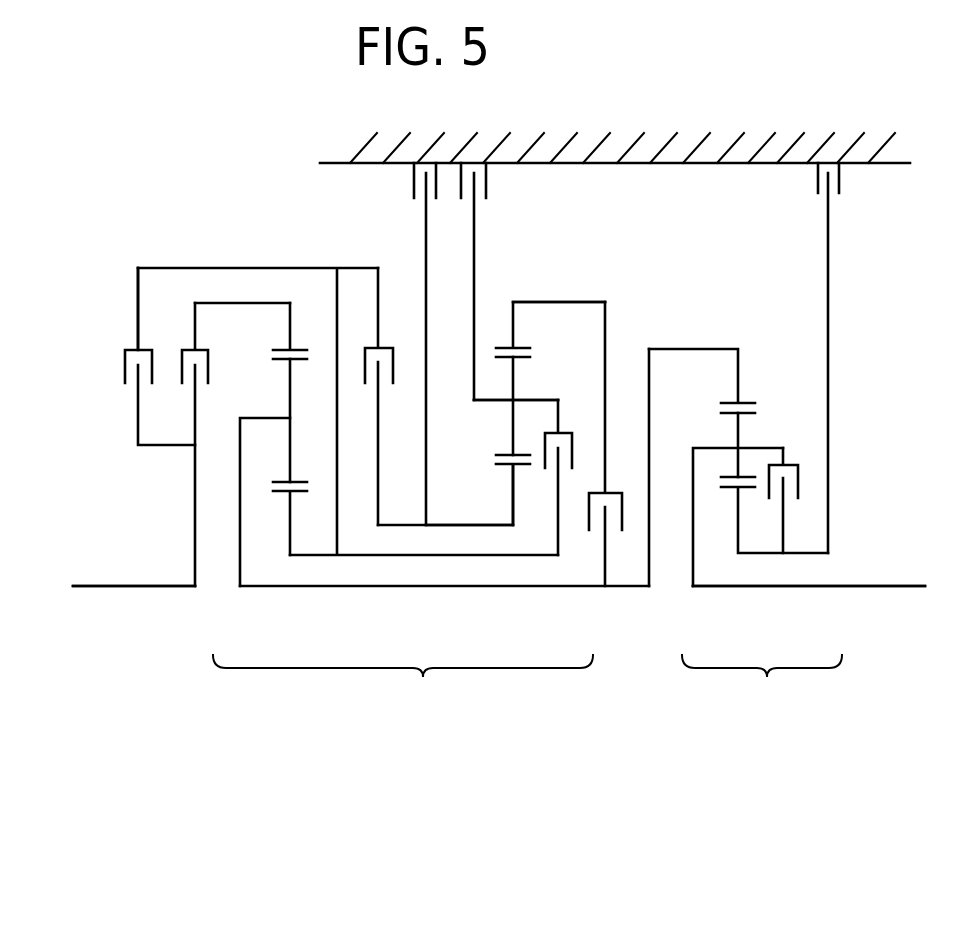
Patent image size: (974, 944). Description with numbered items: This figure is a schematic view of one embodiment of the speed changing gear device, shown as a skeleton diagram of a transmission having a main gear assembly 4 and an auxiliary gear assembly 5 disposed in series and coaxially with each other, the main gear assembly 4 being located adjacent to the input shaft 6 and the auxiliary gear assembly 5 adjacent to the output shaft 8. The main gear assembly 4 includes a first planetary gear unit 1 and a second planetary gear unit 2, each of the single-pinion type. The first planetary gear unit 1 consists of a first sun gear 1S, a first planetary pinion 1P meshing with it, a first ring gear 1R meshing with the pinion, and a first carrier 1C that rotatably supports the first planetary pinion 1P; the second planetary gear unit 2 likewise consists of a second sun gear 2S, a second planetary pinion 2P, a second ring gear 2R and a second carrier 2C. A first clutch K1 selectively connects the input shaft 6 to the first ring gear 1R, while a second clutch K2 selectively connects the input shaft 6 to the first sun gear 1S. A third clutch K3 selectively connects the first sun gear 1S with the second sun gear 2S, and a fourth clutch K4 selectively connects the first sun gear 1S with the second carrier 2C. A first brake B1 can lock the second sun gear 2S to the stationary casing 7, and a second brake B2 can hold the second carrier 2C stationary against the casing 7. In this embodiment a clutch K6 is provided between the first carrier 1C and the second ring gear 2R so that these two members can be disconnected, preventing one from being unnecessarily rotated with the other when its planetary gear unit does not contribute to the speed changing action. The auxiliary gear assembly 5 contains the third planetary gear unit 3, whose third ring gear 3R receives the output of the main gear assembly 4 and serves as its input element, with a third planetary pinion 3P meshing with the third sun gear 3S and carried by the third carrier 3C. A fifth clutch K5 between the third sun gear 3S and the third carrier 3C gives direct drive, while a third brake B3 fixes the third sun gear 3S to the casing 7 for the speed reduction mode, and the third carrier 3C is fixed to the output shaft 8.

The first planetary gear unit 1 is at (276, 504).
The second planetary gear unit 2 is at (528, 502).
The third planetary gear unit 3 is at (762, 392).
The main gear assembly 4 is at (403, 685).
The auxiliary gear assembly 5 is at (762, 685).
The input shaft 6 is at (115, 583).
The casing 7 is at (682, 147).
The output shaft 8 is at (902, 583).
The first ring gear 1R is at (298, 348).
The first carrier 1C is at (247, 417).
The first planetary pinion 1P is at (295, 457).
The first sun gear 1S is at (297, 495).
The second ring gear 2R is at (523, 346).
The second carrier 2C is at (493, 403).
The second planetary pinion 2P is at (513, 420).
The second sun gear 2S is at (503, 472).
The third ring gear 3R is at (733, 400).
The third carrier 3C is at (707, 447).
The third planetary pinion 3P is at (742, 430).
The third sun gear 3S is at (728, 490).
The first clutch K1 is at (212, 444).
The second clutch K2 is at (142, 356).
The third clutch K3 is at (391, 396).
The fourth clutch K4 is at (566, 460).
The fifth clutch K5 is at (797, 463).
The clutch K6 is at (607, 543).
The first brake B1 is at (396, 344).
The second brake B2 is at (499, 281).
The third brake B3 is at (852, 358).